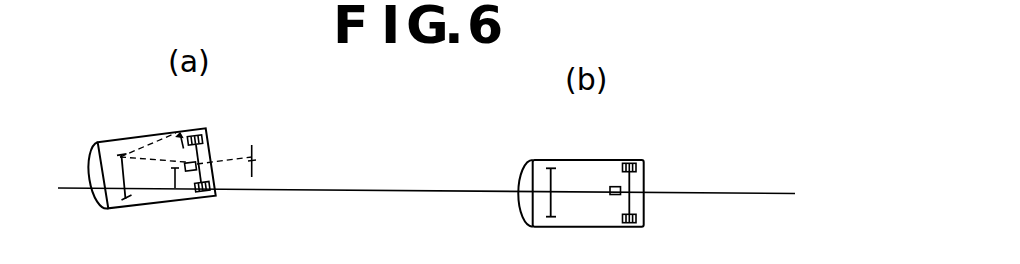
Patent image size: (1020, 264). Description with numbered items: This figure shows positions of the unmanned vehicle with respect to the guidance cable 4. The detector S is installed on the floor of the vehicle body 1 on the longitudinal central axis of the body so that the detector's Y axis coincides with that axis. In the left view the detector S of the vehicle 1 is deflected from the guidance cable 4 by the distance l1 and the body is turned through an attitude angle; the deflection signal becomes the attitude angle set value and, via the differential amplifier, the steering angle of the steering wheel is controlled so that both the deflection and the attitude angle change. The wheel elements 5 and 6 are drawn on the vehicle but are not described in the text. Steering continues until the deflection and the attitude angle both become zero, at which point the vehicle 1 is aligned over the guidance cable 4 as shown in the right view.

The vehicle body 1 is at (575, 160).
The guidance cable 4 is at (770, 193).
The drive wheels 5 is at (206, 194).
The front steering wheel 6 is at (123, 199).
The detector S is at (201, 164).
The deflection distance l1 is at (174, 180).